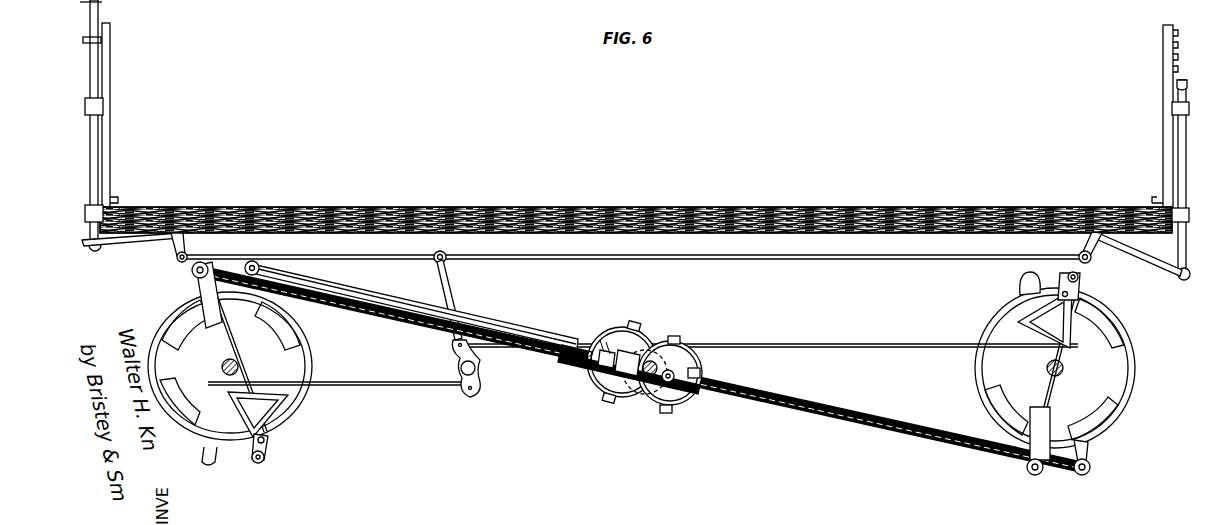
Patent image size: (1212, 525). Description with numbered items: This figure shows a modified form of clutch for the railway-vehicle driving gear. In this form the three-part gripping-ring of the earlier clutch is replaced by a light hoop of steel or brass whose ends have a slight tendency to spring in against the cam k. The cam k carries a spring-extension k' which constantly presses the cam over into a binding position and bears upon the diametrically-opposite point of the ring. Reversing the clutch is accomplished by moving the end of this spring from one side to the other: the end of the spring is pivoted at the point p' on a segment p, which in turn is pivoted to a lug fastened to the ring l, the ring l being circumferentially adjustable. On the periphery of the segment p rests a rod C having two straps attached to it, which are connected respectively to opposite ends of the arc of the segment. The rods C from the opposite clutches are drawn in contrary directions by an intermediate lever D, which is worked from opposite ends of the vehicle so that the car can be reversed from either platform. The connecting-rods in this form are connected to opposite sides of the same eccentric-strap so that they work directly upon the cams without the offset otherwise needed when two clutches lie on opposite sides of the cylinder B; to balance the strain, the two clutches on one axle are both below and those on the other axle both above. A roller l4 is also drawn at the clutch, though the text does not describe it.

The cylinder B is at (310, 357).
The rod C is at (366, 382).
The intermediate lever D is at (452, 303).
The cam k is at (625, 380).
The spring-extension k' is at (658, 361).
The ring l is at (160, 386).
The roller l4 is at (268, 456).
The segment p is at (651, 363).
The pivot point p' is at (666, 366).